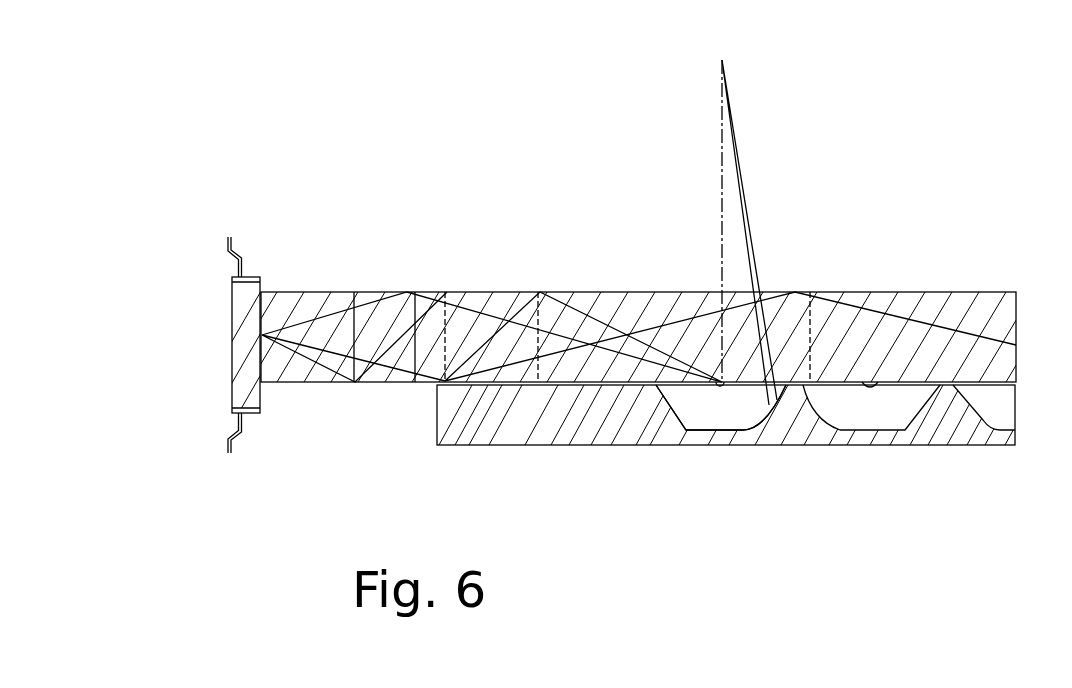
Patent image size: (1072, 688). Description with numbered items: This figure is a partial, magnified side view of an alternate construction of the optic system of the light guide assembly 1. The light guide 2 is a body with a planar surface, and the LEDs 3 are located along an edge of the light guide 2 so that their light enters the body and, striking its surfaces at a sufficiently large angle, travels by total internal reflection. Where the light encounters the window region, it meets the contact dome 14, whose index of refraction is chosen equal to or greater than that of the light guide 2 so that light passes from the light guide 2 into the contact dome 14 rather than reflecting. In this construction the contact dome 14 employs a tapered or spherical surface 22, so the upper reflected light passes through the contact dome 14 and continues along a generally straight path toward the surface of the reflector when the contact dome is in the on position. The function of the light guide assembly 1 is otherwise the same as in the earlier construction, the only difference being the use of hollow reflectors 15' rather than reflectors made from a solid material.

The light guide assembly 1 is at (360, 430).
The light guide 2 is at (342, 290).
The LEDs 3 is at (260, 290).
The contact dome 14 is at (724, 386).
The hollow reflectors 15' is at (737, 473).
The tapered or spherical surface 22 is at (690, 410).